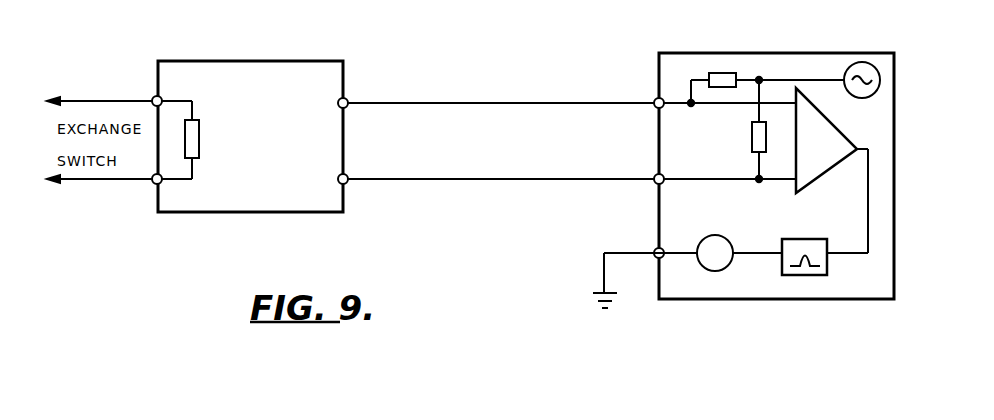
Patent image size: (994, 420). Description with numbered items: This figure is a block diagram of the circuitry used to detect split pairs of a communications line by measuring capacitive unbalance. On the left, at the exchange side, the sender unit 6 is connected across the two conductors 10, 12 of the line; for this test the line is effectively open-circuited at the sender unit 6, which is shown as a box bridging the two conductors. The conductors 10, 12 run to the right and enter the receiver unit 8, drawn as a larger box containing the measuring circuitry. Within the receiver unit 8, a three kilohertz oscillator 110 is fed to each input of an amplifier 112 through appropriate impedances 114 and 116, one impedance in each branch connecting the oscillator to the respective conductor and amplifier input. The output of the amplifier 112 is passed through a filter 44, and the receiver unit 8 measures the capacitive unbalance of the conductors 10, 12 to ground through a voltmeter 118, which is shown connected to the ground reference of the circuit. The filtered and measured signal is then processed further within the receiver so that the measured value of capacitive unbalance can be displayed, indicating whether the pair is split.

The sender unit 6 is at (346, 62).
The receiver unit 8 is at (657, 54).
The conductor 10 is at (473, 105).
The conductor 12 is at (474, 182).
The filter 44 is at (803, 276).
The 3 kHz oscillator 110 is at (873, 63).
The amplifier 112 is at (822, 158).
The impedance 114 is at (725, 73).
The impedance 116 is at (751, 135).
The voltmeter 118 is at (724, 270).